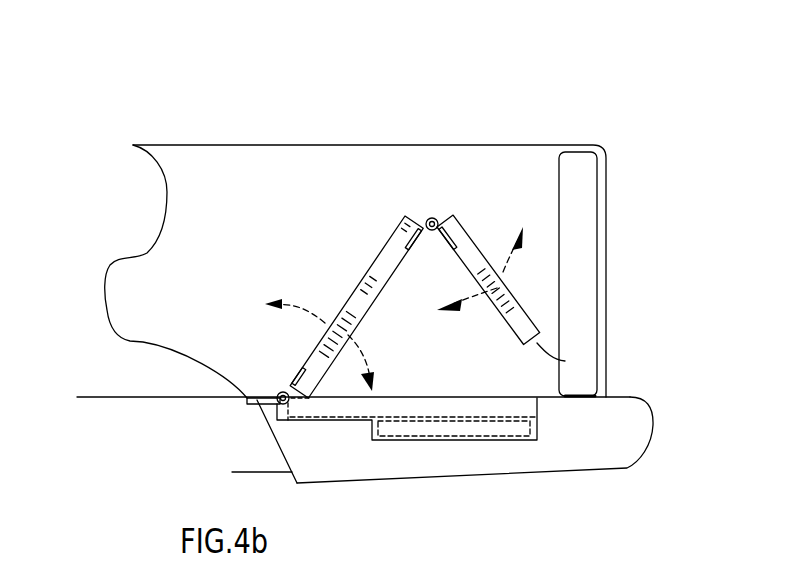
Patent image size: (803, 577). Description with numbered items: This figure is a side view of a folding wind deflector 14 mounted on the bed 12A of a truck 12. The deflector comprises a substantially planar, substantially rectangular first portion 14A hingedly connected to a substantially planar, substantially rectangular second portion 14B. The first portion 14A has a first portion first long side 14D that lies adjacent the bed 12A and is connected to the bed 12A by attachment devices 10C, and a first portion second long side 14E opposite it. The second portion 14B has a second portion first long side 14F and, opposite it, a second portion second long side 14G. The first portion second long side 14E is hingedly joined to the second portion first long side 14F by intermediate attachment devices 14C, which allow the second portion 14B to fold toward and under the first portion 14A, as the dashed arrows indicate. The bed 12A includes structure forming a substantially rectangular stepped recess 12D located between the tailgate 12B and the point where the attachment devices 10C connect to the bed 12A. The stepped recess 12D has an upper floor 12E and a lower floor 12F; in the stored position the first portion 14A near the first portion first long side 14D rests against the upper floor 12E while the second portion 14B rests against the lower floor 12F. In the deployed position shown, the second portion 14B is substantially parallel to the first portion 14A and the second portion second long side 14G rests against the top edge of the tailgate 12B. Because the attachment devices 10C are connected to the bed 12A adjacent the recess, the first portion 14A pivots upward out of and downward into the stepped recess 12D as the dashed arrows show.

The truck 12 is at (243, 206).
The bed 12A is at (152, 397).
The tailgate 12B is at (580, 173).
The stepped recess 12D is at (533, 428).
The upper floor 12E is at (342, 420).
The lower floor 12F is at (465, 440).
The attachment devices 10C is at (260, 400).
The folding wind deflector 14 is at (328, 290).
The first portion 14A is at (366, 278).
The second portion 14B is at (512, 287).
The intermediate attachment devices 14C is at (431, 218).
The first portion first long side 14D is at (281, 405).
The first portion second long side 14E is at (421, 214).
The second portion first long side 14F is at (436, 218).
The second portion second long side 14G is at (565, 361).